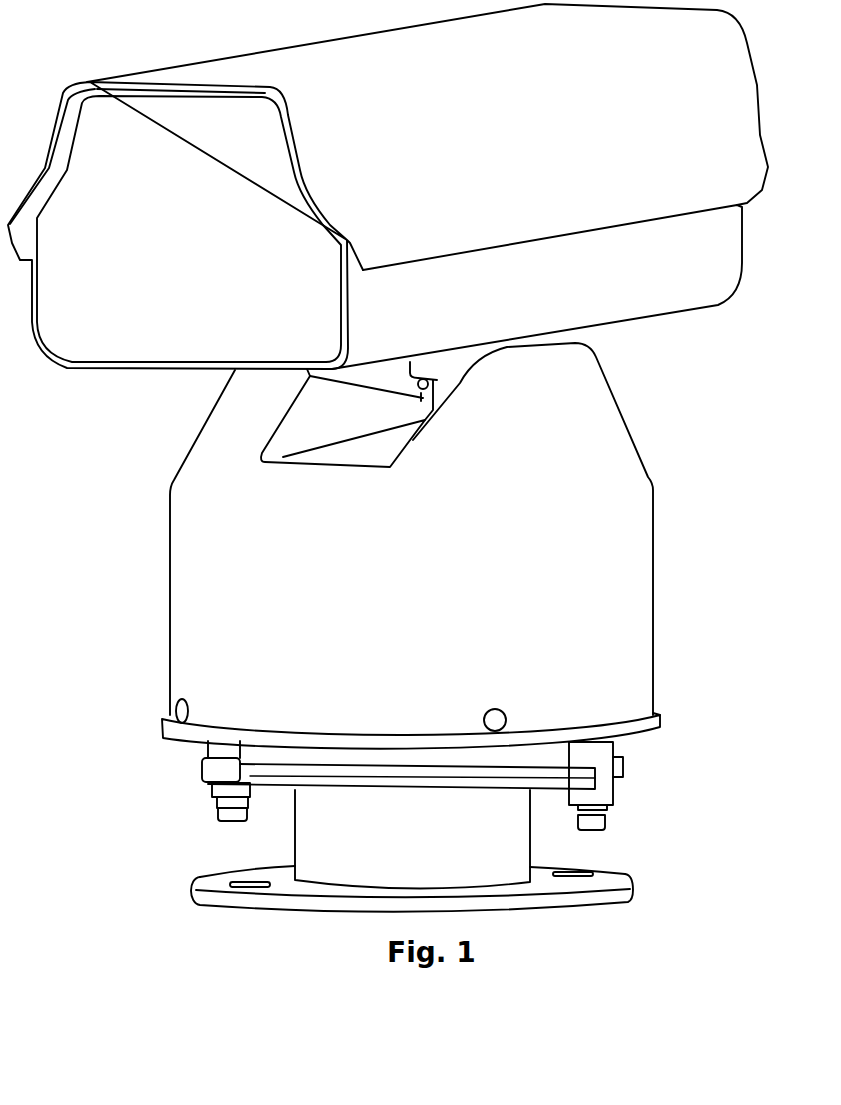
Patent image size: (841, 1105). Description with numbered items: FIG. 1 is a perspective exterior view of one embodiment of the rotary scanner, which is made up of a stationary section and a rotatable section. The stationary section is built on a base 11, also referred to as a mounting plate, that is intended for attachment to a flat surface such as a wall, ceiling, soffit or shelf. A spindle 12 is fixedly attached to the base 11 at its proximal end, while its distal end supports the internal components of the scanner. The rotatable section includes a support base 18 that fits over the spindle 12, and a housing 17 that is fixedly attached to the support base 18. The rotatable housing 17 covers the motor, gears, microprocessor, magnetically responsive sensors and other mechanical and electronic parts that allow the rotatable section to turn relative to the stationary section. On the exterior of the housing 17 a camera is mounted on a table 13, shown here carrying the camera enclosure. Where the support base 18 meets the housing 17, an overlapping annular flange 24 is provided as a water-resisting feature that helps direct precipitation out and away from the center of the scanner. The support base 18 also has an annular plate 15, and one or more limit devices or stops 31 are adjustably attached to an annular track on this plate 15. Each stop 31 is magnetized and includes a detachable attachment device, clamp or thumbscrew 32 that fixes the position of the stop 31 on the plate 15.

The base 11 is at (620, 890).
The spindle 12 is at (510, 855).
The table 13 is at (463, 362).
The annular plate 15 is at (202, 770).
The housing 17 is at (608, 435).
The support base 18 is at (277, 758).
The annular flange 24 is at (640, 730).
The stop 31 is at (603, 792).
The thumbscrew 32 is at (603, 823).